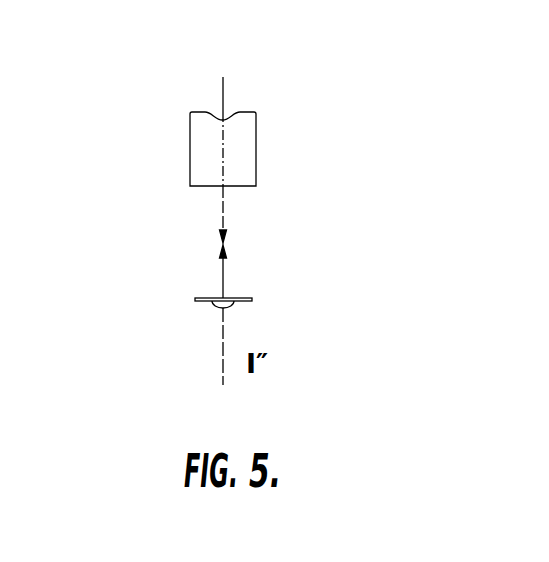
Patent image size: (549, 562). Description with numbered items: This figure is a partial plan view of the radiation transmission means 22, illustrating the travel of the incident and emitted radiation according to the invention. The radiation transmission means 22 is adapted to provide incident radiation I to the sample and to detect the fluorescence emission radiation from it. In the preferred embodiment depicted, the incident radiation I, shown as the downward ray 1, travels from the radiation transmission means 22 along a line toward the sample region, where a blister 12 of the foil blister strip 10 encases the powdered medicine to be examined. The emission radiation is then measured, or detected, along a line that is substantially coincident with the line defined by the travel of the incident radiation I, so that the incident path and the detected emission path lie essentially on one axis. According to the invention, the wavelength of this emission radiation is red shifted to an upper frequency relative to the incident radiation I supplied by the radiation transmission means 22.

The radiation transmission means 22 is at (190, 157).
The blister 12 is at (213, 302).
The incident radiation I is at (243, 83).
The light ray I 1 is at (240, 214).
The foil blister strip 10 is at (245, 271).